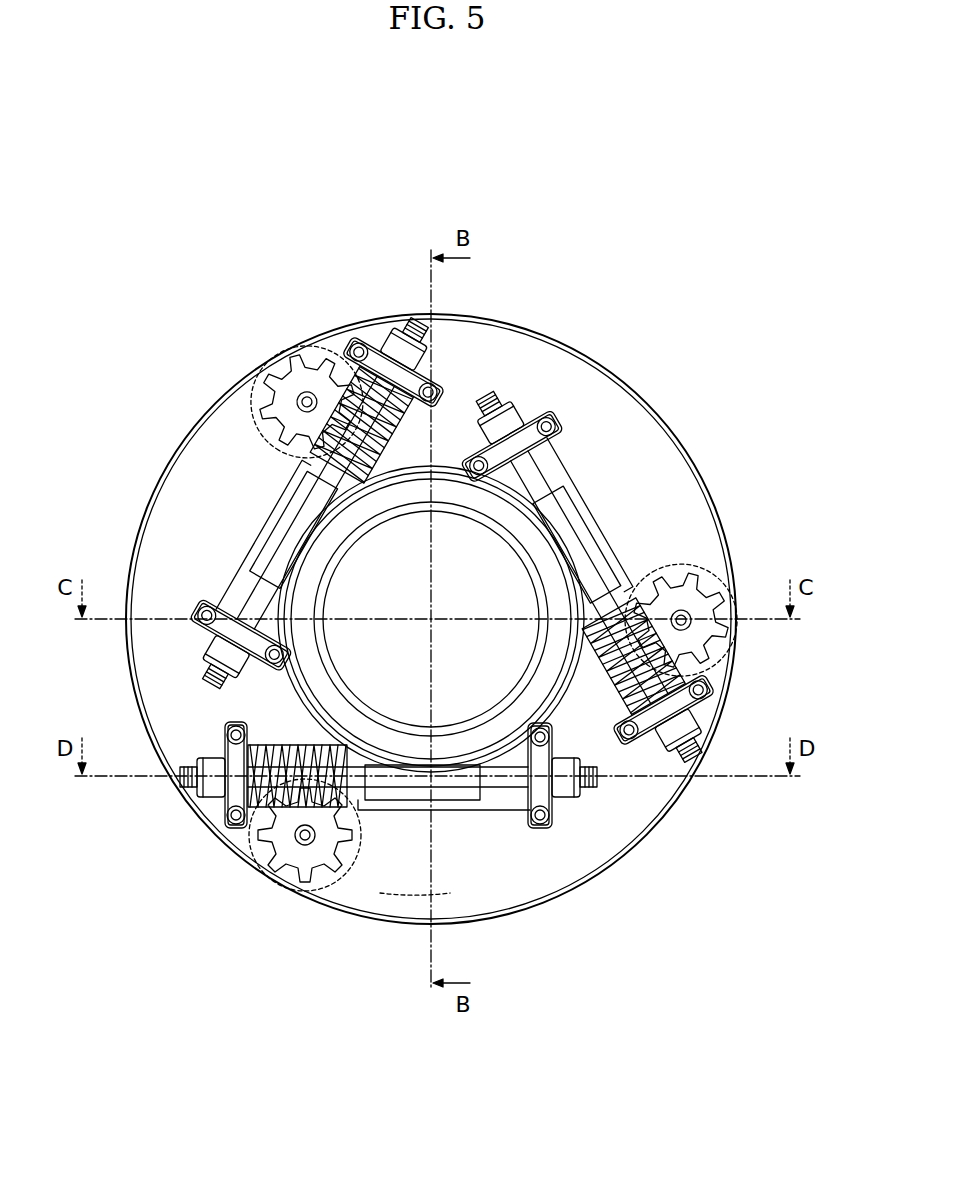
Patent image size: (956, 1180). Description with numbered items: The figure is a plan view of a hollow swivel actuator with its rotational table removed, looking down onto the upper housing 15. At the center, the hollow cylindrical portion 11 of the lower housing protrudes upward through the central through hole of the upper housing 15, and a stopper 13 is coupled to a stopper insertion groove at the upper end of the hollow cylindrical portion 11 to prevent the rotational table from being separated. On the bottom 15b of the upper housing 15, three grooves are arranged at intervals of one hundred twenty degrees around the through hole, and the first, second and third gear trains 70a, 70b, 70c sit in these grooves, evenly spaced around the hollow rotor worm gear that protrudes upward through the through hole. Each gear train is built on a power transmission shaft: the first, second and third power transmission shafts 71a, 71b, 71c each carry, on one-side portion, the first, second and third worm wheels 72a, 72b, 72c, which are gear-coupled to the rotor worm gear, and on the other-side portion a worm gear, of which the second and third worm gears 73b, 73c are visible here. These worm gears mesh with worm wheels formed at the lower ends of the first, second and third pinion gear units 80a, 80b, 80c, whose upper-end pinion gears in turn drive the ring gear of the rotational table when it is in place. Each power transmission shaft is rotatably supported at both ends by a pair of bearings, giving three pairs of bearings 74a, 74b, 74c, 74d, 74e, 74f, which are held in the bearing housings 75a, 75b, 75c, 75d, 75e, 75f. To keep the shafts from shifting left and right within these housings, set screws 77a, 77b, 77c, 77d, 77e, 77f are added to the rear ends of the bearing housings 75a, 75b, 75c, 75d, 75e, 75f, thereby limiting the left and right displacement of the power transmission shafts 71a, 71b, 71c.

The hollow cylindrical portion 11 is at (472, 728).
The stopper 13 is at (523, 707).
The upper housing 15 is at (740, 647).
The bottom 15b is at (413, 893).
The first gear train 70a is at (275, 535).
The second gear train 70b is at (410, 810).
The third gear train 70c is at (587, 517).
The first power transmission shaft 71a is at (255, 607).
The second power transmission shaft 71b is at (508, 790).
The third power transmission shaft 71c is at (522, 480).
The first worm wheel 72a is at (265, 521).
The second worm wheel 72b is at (445, 800).
The third worm wheel 72c is at (587, 553).
The second worm gear 73b is at (255, 750).
The third worm gear 73c is at (665, 715).
The bearing 74a is at (330, 350).
The bearing 74b is at (230, 635).
The bearing 74c is at (237, 829).
The bearing 74d is at (542, 800).
The bearing 74e is at (673, 702).
The bearing 74f is at (552, 420).
The bearing housing 75a is at (394, 344).
The bearing housing 75b is at (218, 668).
The bearing housing 75c is at (212, 790).
The bearing housing 75d is at (566, 788).
The bearing housing 75e is at (690, 728).
The bearing housing 75f is at (507, 422).
The set screw 77a is at (418, 323).
The set screw 77b is at (208, 688).
The set screw 77c is at (178, 787).
The set screw 77d is at (590, 783).
The set screw 77e is at (700, 736).
The set screw 77f is at (483, 390).
The first pinion gear unit 80a is at (264, 440).
The second pinion gear unit 80b is at (352, 868).
The third pinion gear unit 80c is at (686, 571).